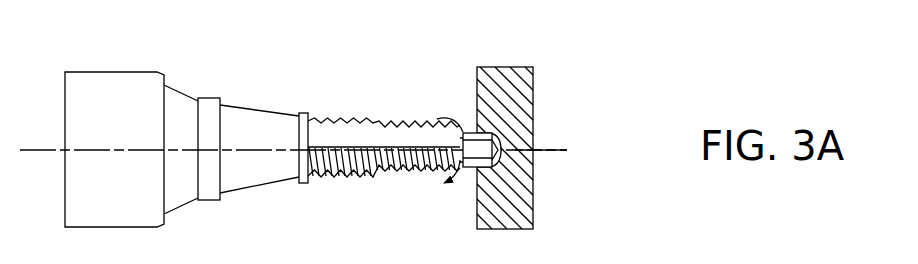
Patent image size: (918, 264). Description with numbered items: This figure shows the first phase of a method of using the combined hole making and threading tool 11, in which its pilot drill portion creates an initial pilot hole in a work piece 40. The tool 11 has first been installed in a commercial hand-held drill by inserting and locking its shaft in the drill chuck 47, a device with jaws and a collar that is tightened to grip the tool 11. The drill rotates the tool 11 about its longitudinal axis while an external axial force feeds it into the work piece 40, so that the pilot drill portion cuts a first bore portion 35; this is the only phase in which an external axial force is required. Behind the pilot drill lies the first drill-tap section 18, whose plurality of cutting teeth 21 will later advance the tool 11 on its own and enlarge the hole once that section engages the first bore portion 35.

The tool 11 is at (374, 134).
The drill chuck 47 is at (259, 129).
The cutting teeth 21 is at (417, 130).
The first drill-tap section 18 is at (413, 170).
The work piece 40 is at (528, 90).
The first bore portion 35 is at (490, 131).